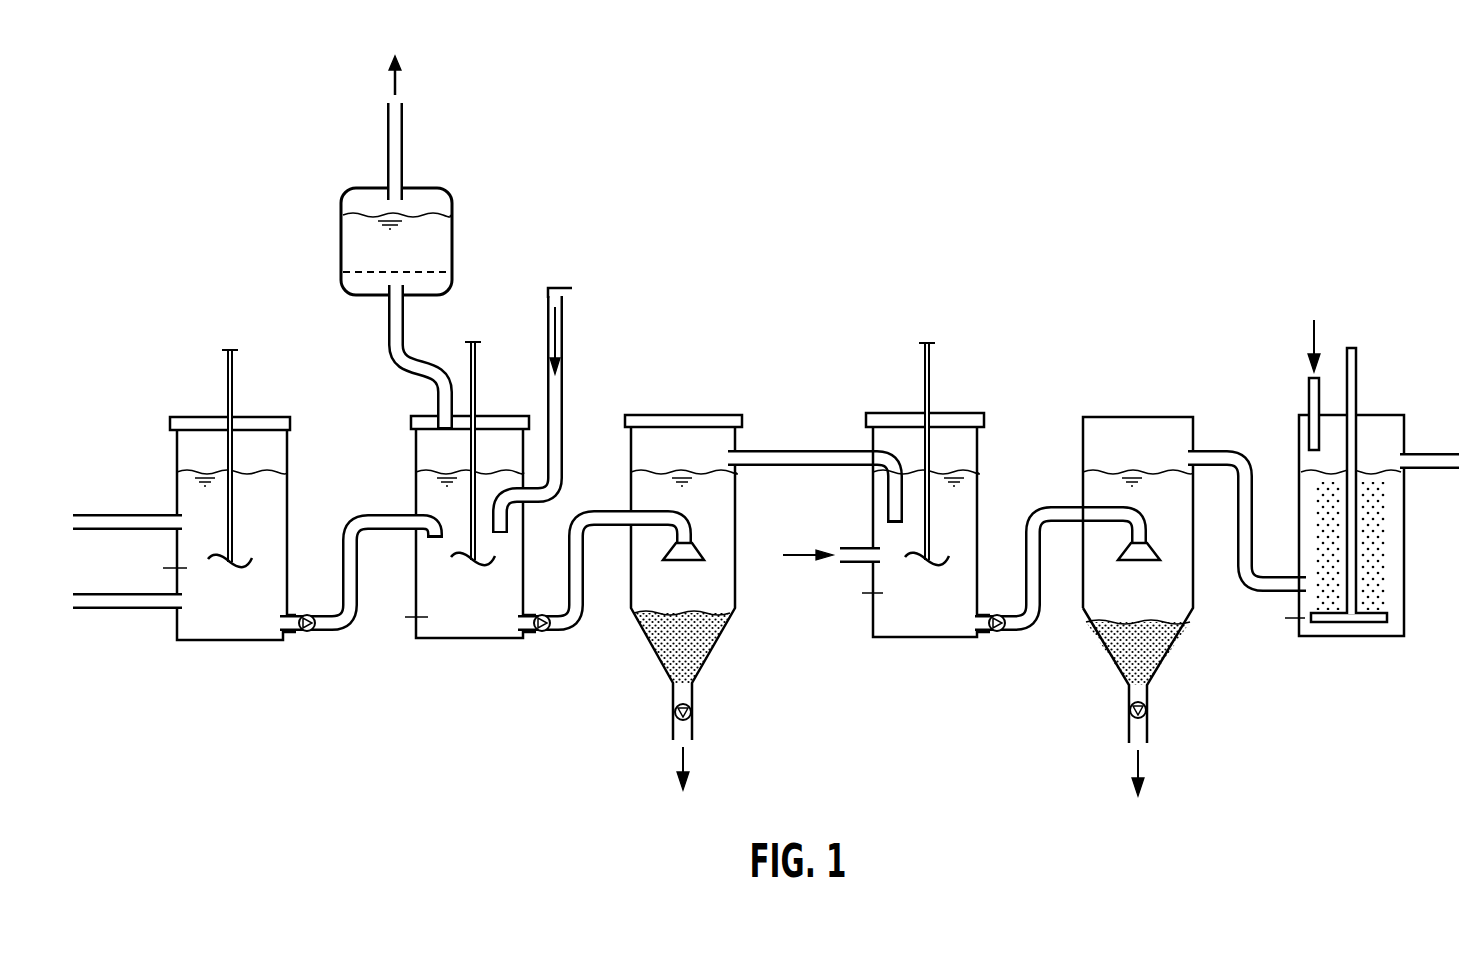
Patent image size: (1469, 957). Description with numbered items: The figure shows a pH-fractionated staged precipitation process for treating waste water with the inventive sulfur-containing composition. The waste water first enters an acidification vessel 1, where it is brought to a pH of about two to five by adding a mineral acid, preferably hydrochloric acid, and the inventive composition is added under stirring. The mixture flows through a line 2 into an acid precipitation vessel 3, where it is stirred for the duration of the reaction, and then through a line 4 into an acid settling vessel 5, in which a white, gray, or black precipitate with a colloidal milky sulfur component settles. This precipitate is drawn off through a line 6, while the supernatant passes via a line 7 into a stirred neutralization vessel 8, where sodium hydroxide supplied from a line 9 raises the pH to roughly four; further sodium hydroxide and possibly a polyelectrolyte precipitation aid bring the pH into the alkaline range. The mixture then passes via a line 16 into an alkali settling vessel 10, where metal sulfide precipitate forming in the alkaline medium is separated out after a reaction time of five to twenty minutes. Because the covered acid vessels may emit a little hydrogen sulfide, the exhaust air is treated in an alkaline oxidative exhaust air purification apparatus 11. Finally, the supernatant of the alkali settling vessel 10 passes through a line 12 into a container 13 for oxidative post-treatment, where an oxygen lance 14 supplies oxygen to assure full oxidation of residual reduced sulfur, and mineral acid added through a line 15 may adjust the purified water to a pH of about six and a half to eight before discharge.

The acidification vessel 1 is at (240, 617).
The line 2 is at (312, 606).
The acid precipitation vessel 3 is at (463, 616).
The line 4 is at (618, 532).
The acid settling vessel 5 is at (694, 605).
The line 6 is at (693, 747).
The line 7 is at (847, 473).
The stirred neutralization vessel 8 is at (917, 603).
The line 9 is at (831, 574).
The alkali settling vessel 10 is at (1124, 604).
The alkaline oxidative exhaust air purification apparatus 11 is at (378, 267).
The line 12 is at (1258, 477).
The container 13 is at (1395, 578).
The oxygen lance 14 is at (1373, 465).
The line 15 is at (1302, 367).
The line 16 is at (1004, 645).